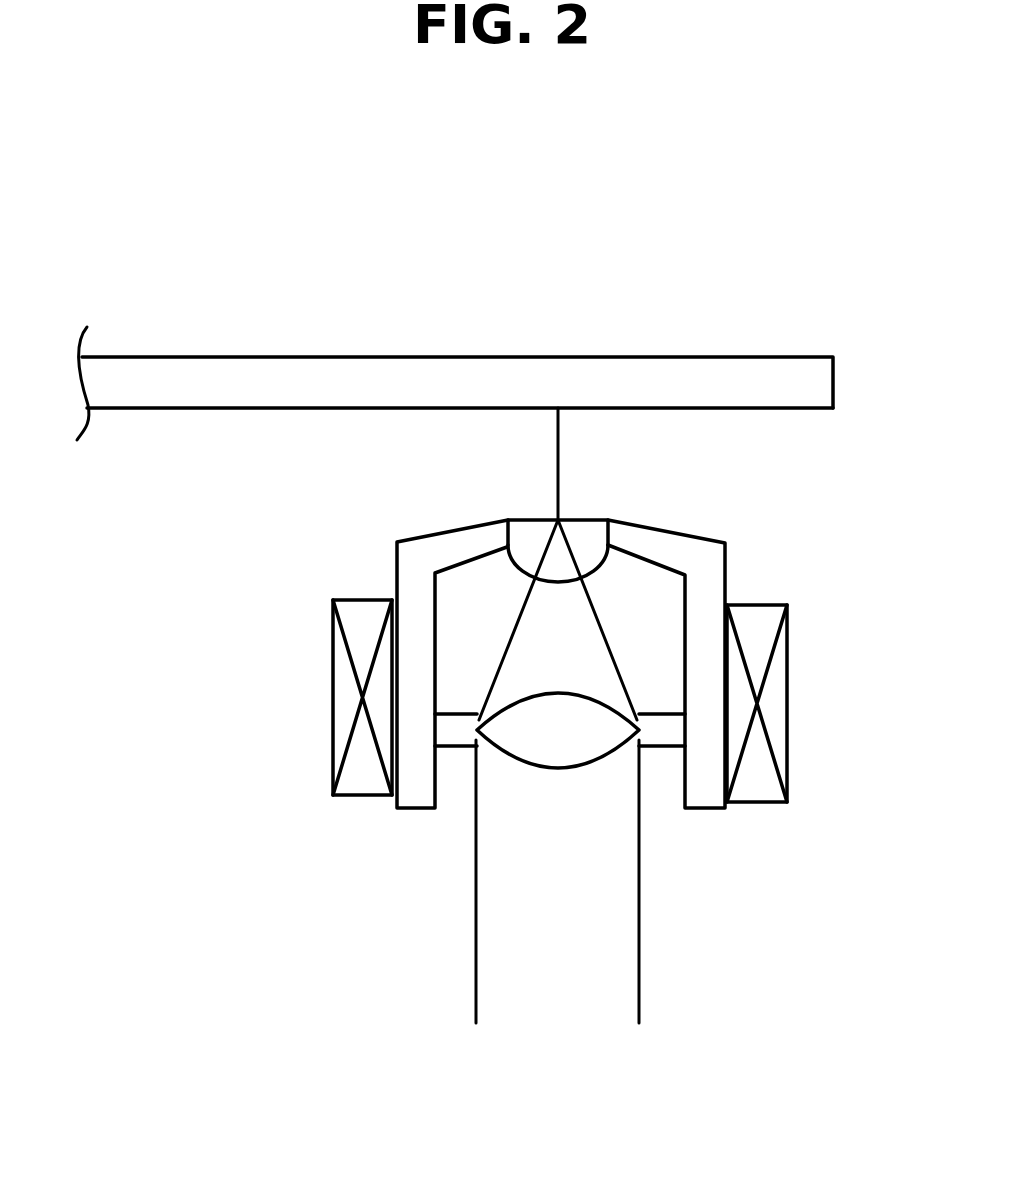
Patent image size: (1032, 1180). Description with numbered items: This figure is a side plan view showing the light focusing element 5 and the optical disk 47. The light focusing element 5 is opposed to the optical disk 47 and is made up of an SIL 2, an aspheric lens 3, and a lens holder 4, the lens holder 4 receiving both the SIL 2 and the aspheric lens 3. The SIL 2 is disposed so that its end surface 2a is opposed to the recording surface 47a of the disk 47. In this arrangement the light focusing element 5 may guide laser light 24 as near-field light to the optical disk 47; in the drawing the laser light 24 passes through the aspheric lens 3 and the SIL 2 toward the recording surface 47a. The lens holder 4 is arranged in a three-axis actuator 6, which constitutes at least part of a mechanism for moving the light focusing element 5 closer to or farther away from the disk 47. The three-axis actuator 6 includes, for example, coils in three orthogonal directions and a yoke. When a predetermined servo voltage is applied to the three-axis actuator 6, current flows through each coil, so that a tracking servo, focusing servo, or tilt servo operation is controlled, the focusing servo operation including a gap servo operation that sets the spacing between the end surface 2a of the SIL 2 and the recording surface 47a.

The optical disk 47 is at (620, 370).
The recording surface 47a is at (185, 408).
The light focusing element 5 is at (434, 504).
The SIL 2 is at (590, 518).
The end surface 2a is at (535, 520).
The lens holder 4 is at (405, 578).
The aspheric lens 3 is at (593, 743).
The three-axis actuator 6 is at (765, 773).
The laser light 24 is at (639, 970).